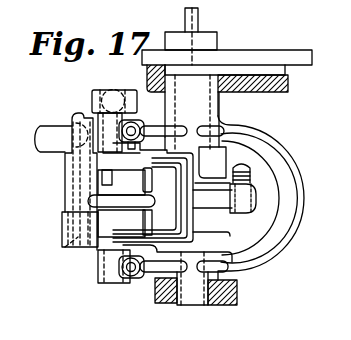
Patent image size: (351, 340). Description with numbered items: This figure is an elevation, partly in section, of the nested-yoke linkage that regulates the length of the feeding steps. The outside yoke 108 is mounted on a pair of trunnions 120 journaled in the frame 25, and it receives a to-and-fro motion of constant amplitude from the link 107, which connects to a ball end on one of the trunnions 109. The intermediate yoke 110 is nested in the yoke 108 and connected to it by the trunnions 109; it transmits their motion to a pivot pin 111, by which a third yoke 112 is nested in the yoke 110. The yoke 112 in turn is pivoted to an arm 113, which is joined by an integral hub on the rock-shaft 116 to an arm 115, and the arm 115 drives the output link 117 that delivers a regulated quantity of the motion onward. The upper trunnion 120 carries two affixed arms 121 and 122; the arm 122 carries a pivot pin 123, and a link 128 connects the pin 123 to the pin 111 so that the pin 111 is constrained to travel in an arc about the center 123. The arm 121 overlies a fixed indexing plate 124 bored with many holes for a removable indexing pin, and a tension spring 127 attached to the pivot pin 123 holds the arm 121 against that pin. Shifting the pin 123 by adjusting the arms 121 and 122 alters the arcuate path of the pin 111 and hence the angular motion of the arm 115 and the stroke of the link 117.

The frame 25 is at (290, 78).
The link 107 is at (92, 98).
The yoke 108 is at (258, 262).
The trunnions 109 is at (110, 88).
The yoke 110 is at (208, 238).
The pivot pin 111 is at (163, 202).
The yoke 112 is at (147, 218).
The arm 113 is at (63, 218).
The arm 115 is at (98, 172).
The rock-shaft 116 is at (65, 247).
The link 117 is at (60, 142).
The trunnions 120 is at (210, 105).
The arm 121 is at (205, 32).
The arm 122 is at (222, 152).
The pivot pin 123 is at (240, 198).
The indexing plate 124 is at (272, 50).
The tension spring 127 is at (242, 168).
The link 128 is at (218, 198).